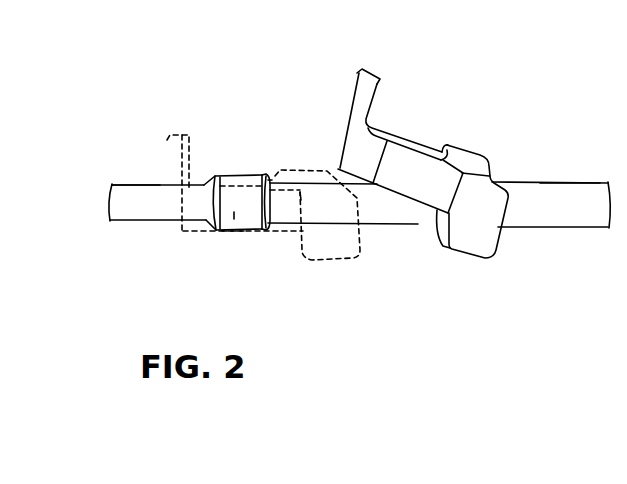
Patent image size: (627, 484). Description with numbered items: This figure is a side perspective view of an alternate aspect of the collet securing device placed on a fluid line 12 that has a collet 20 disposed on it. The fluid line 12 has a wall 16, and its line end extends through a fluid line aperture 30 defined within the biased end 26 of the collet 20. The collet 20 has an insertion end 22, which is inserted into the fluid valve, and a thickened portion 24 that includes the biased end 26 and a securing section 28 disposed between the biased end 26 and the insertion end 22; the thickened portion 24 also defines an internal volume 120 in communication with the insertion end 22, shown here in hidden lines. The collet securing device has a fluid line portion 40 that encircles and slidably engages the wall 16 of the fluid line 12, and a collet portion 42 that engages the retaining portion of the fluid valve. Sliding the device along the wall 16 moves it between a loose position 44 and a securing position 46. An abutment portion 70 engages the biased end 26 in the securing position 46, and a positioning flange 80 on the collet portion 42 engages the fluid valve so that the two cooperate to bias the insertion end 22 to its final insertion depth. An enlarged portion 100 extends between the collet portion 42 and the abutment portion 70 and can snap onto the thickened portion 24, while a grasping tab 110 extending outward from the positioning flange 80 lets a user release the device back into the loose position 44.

The fluid line 12 is at (540, 230).
The wall 16 is at (567, 197).
The collet 20 is at (229, 135).
The insertion end 22 is at (107, 196).
The thickened portion 24 is at (212, 207).
The biased end 26 is at (276, 224).
The securing section 28 is at (208, 200).
The fluid line aperture 30 is at (267, 197).
The fluid line portion 40 is at (503, 172).
The collet portion 42 is at (331, 125).
The loose position 44 is at (458, 137).
The securing position 46 is at (301, 167).
The abutment portion 70 is at (445, 145).
The positioning flange 80 is at (367, 90).
The enlarged portion 100 is at (418, 202).
The grasping tab 110 is at (370, 73).
The internal volume 120 is at (233, 231).